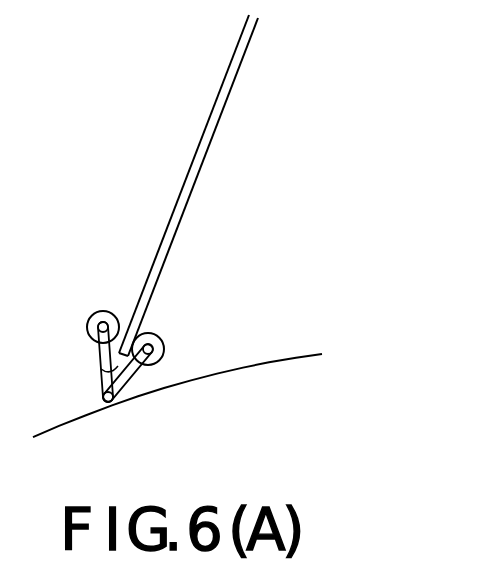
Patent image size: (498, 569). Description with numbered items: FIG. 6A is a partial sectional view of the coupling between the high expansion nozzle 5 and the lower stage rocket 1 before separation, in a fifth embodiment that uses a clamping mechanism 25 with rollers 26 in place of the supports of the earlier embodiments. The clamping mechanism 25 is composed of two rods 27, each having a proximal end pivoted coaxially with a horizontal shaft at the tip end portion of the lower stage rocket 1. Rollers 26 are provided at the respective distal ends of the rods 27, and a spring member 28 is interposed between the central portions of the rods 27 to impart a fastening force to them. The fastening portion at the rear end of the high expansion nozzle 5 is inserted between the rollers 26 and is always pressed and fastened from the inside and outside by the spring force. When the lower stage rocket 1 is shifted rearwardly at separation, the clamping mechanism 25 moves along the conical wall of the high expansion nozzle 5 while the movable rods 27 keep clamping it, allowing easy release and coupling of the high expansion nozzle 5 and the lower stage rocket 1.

The lower stage rocket 1 is at (200, 388).
The high expansion nozzle 5 is at (199, 142).
The clamping mechanism 25 is at (93, 382).
The rollers 26 is at (90, 316).
The rods 27 is at (101, 371).
The spring member 28 is at (96, 370).